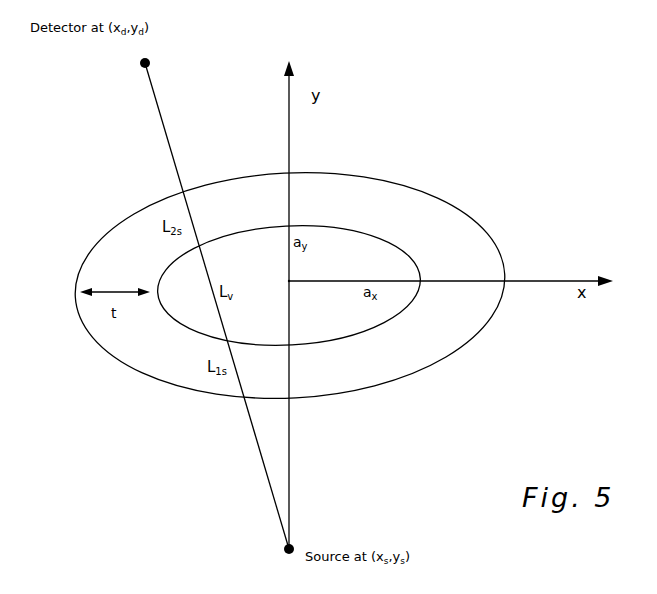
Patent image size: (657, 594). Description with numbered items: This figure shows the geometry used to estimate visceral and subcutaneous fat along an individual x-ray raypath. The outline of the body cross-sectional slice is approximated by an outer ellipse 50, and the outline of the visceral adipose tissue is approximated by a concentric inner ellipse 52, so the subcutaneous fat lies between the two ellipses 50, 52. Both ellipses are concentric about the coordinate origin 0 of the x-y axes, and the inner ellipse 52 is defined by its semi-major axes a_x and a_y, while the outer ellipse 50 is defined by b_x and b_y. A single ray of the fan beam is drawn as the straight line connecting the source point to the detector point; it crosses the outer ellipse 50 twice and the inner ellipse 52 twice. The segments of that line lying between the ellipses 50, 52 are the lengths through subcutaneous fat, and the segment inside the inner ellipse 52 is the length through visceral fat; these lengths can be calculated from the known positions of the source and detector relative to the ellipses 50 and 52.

The ellipse 50 is at (436, 199).
The concentric inner ellipse 52 is at (404, 256).
The coordinate origin (0,0) 0 is at (306, 290).